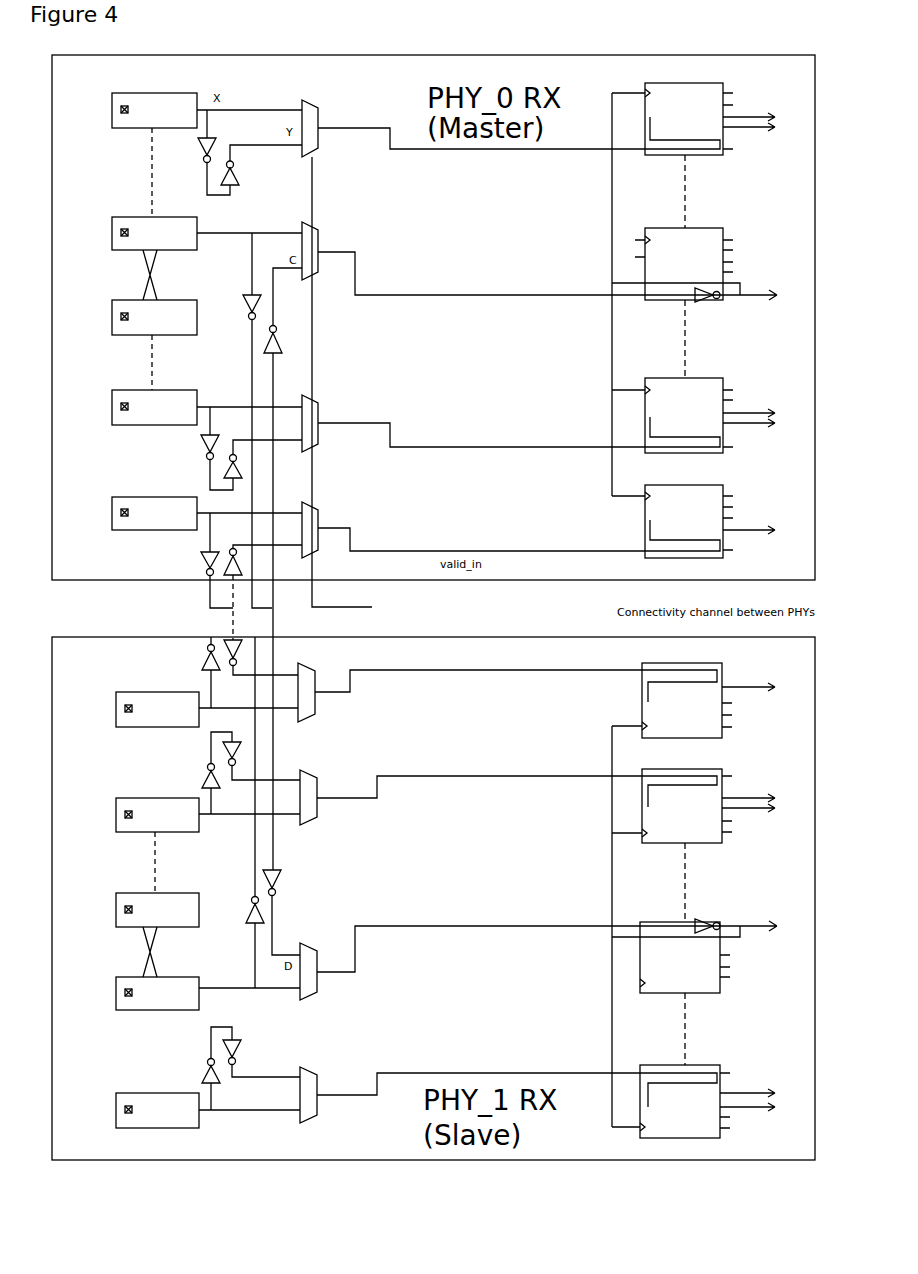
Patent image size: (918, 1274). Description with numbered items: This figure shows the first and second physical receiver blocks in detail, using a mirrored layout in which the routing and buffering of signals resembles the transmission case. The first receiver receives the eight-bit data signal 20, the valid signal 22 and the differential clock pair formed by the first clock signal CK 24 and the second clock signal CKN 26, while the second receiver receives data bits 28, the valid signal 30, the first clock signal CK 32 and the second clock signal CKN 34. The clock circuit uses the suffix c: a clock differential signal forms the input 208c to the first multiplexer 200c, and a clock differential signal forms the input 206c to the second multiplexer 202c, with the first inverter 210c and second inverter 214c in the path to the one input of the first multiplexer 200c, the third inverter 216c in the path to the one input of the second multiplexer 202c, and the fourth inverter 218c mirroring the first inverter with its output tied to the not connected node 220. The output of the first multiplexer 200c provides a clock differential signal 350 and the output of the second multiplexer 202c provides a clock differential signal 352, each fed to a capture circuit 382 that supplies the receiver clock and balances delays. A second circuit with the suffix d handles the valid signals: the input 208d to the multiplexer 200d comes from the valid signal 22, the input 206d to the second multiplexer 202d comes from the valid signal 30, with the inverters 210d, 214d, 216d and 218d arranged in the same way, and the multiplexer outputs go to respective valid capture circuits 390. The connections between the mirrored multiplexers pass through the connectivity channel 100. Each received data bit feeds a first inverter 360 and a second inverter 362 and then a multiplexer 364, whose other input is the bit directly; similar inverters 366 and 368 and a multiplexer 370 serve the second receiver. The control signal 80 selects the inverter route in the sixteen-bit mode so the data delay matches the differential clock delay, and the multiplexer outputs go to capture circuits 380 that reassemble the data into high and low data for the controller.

The data signal 20 is at (165, 93).
The valid signal 22 is at (148, 496).
The first clock signal CK 24 is at (176, 207).
The second clock signal CKN 26 is at (172, 299).
The data bits 8 to 15 28 is at (158, 789).
The valid signal 30 is at (158, 683).
The first clock signal CK 32 is at (172, 976).
The second clock signal CKN 34 is at (165, 892).
The control signal 80 is at (330, 607).
The connectivity channel 100 is at (489, 608).
The first multiplexer 200c is at (318, 235).
The first multiplexer 200d is at (318, 510).
The second multiplexer 202c is at (317, 952).
The second multiplexer 202d is at (316, 668).
The input 206c is at (249, 997).
The input 206d is at (248, 700).
The input 208c is at (249, 224).
The input 208d is at (249, 504).
The first inverter 210c is at (245, 298).
The first inverter 210d is at (200, 563).
The second inverter 214c is at (288, 569).
The second inverter 214d is at (234, 547).
The third inverter 216c is at (272, 870).
The third inverter 216d is at (230, 640).
The fourth inverter 218c is at (246, 911).
The fourth inverter 218d is at (202, 668).
The not connected node 220 is at (266, 617).
The clock differential signal 350 is at (556, 288).
The clock differential signal 352 is at (556, 939).
The first inverter 360 is at (198, 156).
The second inverter 362 is at (237, 170).
The multiplexer 364 is at (318, 104).
The inverter 366 is at (205, 772).
The inverter 368 is at (236, 740).
The multiplexer 370 is at (317, 778).
The capture circuit 380 is at (713, 610).
The capture circuit 382 is at (684, 610).
The valid capture circuit 390 is at (702, 611).